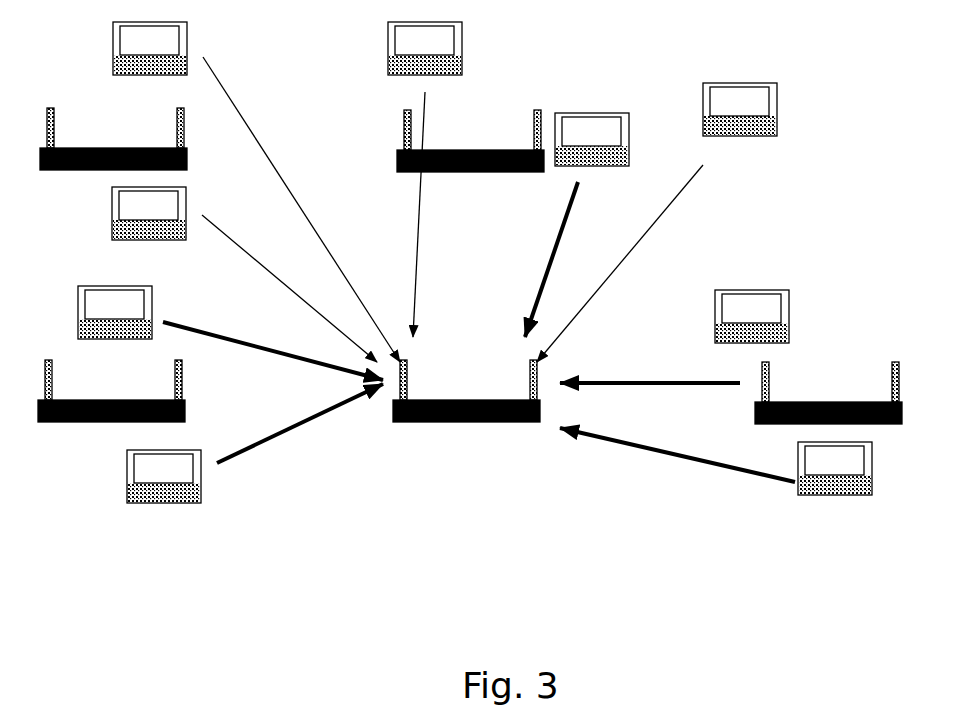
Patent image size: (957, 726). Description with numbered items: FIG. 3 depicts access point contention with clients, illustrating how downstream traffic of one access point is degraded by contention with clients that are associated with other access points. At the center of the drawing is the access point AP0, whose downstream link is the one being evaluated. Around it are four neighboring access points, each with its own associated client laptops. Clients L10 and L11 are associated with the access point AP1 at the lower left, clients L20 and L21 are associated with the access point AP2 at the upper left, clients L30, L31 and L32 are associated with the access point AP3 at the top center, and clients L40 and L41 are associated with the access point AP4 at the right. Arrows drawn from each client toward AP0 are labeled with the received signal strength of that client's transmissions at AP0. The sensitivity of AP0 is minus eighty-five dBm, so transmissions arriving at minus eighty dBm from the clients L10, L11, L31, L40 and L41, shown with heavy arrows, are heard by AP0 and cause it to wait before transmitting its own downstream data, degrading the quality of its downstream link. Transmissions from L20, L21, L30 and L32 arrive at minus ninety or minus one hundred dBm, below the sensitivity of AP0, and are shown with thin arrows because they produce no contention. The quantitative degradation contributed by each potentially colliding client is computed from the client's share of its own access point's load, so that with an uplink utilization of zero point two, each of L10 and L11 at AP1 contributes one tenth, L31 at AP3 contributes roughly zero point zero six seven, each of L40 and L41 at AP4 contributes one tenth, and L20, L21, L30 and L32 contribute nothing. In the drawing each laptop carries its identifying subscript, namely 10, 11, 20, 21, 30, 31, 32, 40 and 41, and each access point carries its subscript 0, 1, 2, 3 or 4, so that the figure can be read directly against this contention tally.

The client laptop L21 is at (256, 192).
The client laptop L20 is at (244, 274).
The client laptop L30 is at (425, 179).
The client laptop L31 is at (577, 225).
The client laptop L32 is at (657, 222).
The client laptop L11 is at (230, 333).
The client laptop L10 is at (255, 443).
The client laptop L40 is at (674, 342).
The client laptop L41 is at (716, 459).
The access point AP0 is at (466, 393).
The access point AP1 is at (111, 393).
The access point AP2 is at (113, 141).
The access point AP3 is at (470, 143).
The access point AP4 is at (828, 395).
The client laptop 21 is at (256, 192).
The client laptop 20 is at (244, 274).
The client laptop 30 is at (425, 179).
The client laptop 31 is at (577, 225).
The client laptop 32 is at (657, 222).
The client laptop 11 is at (230, 333).
The client laptop 10 is at (255, 443).
The client laptop 40 is at (674, 342).
The client laptop 41 is at (716, 459).
The access point 0 is at (466, 393).
The access point 1 is at (111, 393).
The access point 2 is at (113, 141).
The access point 3 is at (470, 143).
The access point 4 is at (828, 395).